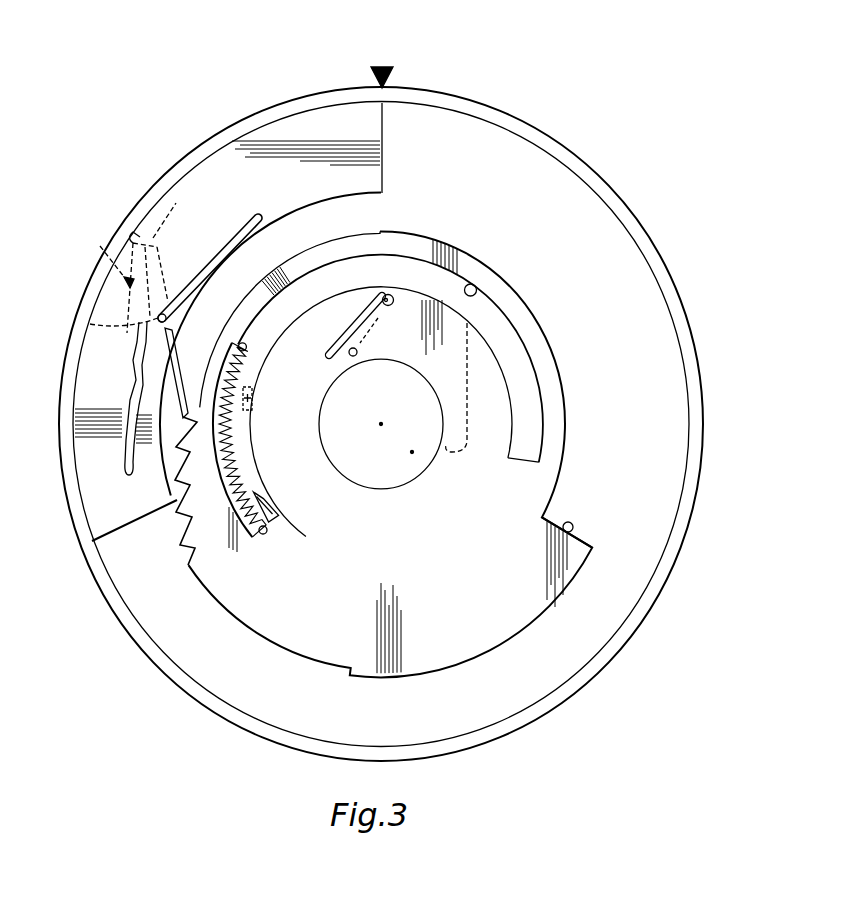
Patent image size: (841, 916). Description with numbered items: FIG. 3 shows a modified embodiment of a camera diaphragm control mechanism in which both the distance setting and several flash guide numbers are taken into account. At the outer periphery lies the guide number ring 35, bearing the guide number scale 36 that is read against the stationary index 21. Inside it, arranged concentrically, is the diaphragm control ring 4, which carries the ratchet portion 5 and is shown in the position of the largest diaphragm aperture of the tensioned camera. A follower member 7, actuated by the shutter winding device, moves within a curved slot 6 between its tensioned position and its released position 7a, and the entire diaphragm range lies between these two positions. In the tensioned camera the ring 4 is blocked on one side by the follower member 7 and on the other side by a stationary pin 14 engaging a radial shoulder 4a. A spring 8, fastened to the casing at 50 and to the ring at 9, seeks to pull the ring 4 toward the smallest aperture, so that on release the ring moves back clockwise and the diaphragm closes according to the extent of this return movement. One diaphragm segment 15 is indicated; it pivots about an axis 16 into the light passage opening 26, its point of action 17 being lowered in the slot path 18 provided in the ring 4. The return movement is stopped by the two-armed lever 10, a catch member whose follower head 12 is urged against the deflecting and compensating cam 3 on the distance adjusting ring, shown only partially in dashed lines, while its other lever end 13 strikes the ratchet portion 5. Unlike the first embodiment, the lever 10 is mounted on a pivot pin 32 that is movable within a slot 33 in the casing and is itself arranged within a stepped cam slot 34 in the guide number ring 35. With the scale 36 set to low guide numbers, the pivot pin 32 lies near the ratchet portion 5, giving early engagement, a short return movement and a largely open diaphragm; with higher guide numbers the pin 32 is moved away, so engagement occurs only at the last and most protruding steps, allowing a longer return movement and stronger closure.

The deflecting and compensating cam 3 is at (100, 246).
The diaphragm control ring 4 is at (208, 590).
The radial shoulder 4a is at (586, 545).
The ratchet portion 5 is at (176, 504).
The curved slot 6 is at (479, 293).
The follower member 7 is at (264, 502).
The released position of follower member 7a is at (253, 401).
The spring 8 is at (238, 450).
The spring attachment point on ring 9 is at (268, 531).
The two-armed lever 10 is at (178, 364).
The follower head 12 is at (153, 242).
The lever end 13 is at (185, 410).
The stationary pin 14 is at (573, 522).
The diaphragm segment 15 is at (467, 398).
The axis 16 is at (356, 357).
The point of action 17 is at (389, 297).
The slot path 18 is at (340, 345).
The stationary index 21 is at (384, 64).
The light passage opening 26 is at (412, 452).
The pivot pin 32 is at (157, 314).
The slot 33 is at (90, 323).
The stepped cam slot 34 is at (128, 470).
The guide number ring 35 is at (463, 103).
The guide number scale 36 is at (253, 107).
The spring attachment point on casing 50 is at (247, 348).